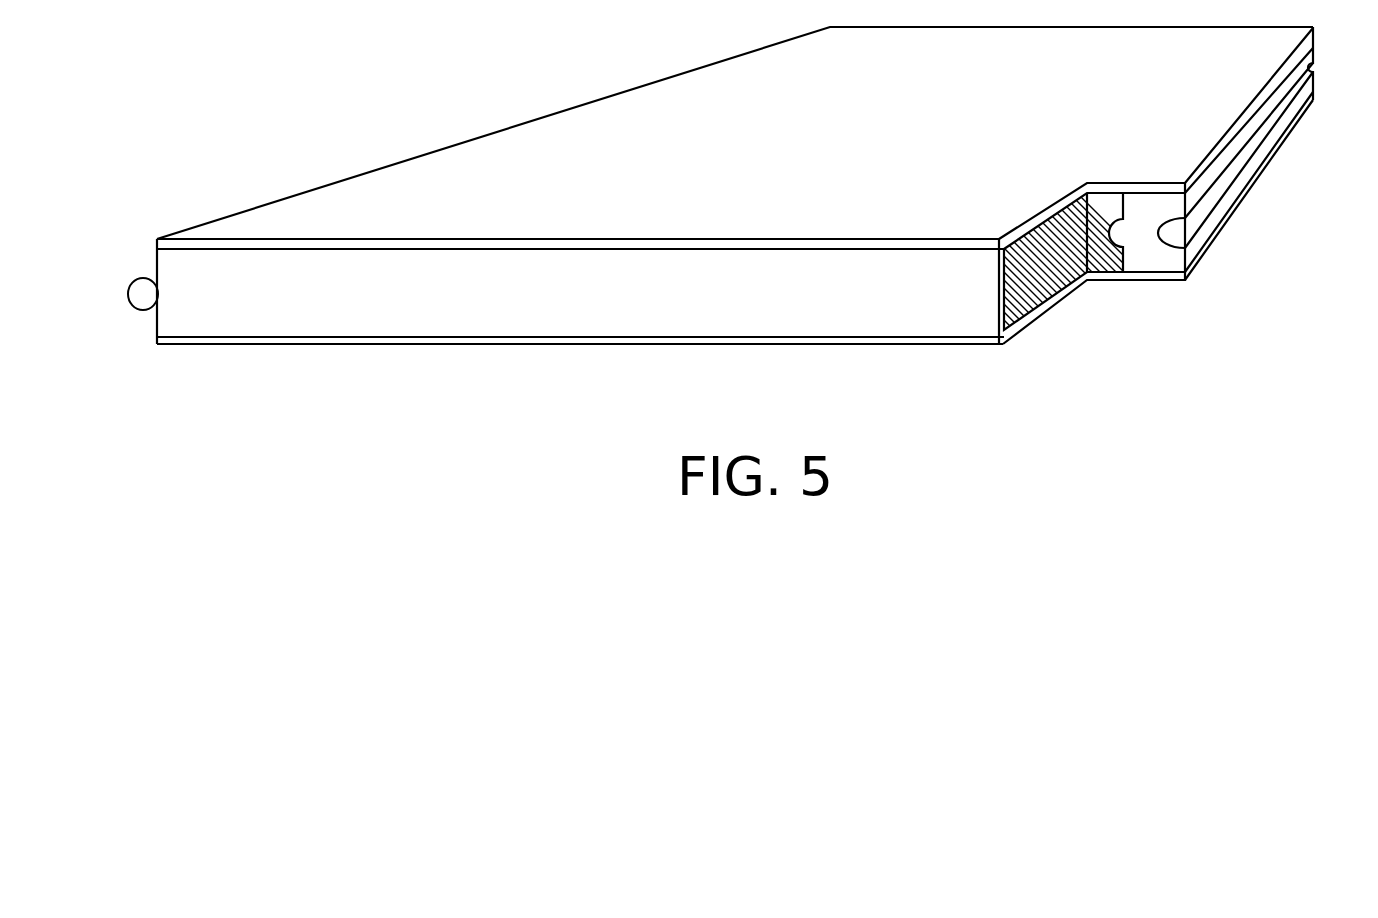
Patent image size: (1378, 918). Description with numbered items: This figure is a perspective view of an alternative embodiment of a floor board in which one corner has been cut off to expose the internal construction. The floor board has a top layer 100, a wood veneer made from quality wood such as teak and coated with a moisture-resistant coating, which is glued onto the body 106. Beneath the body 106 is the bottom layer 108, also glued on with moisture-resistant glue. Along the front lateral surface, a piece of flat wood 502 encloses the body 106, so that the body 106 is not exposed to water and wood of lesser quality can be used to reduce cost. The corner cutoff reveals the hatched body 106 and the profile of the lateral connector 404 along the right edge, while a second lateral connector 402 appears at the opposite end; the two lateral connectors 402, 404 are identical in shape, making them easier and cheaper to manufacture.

The top layer 100 is at (840, 153).
The flat wood 502 is at (797, 312).
The body 106 is at (1043, 253).
The bottom layer 108 is at (718, 343).
The lateral connector 402 is at (145, 297).
The lateral connector 404 is at (1218, 193).